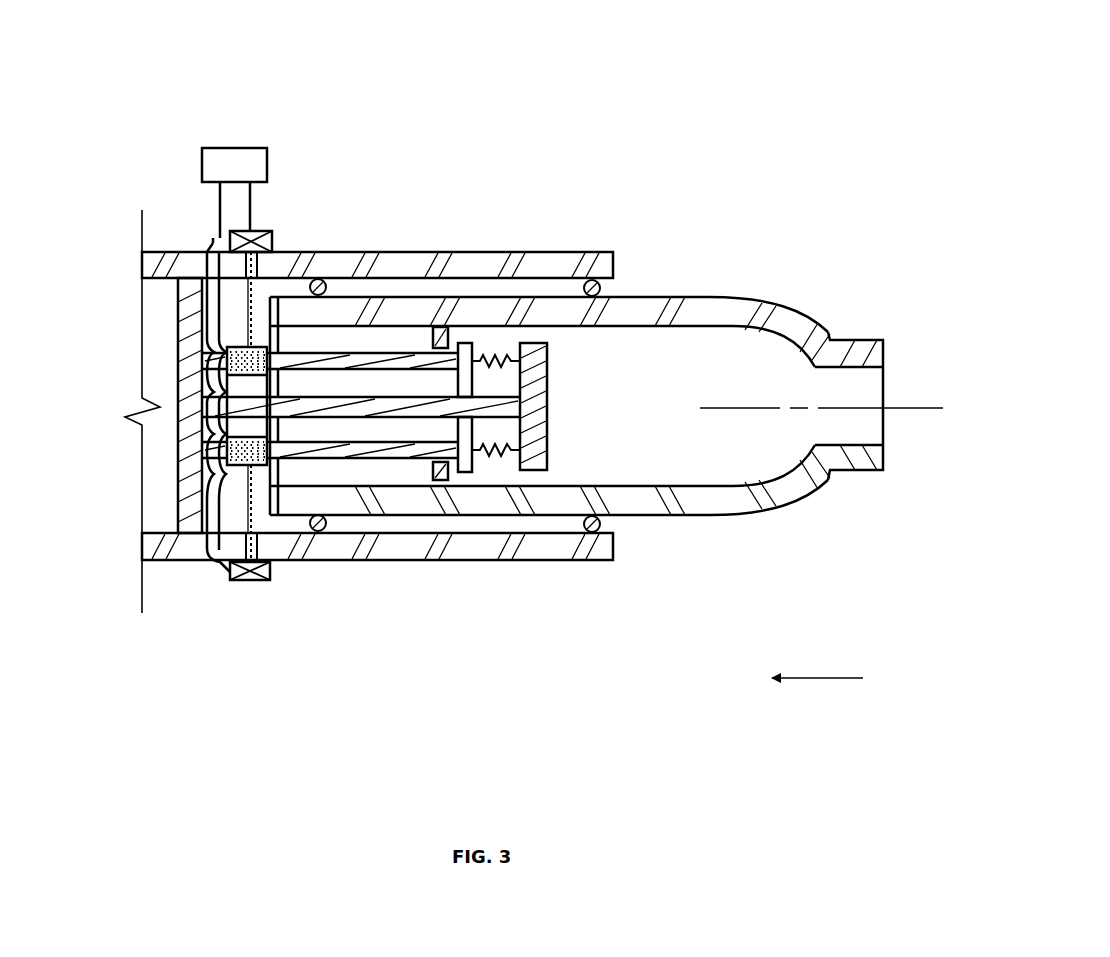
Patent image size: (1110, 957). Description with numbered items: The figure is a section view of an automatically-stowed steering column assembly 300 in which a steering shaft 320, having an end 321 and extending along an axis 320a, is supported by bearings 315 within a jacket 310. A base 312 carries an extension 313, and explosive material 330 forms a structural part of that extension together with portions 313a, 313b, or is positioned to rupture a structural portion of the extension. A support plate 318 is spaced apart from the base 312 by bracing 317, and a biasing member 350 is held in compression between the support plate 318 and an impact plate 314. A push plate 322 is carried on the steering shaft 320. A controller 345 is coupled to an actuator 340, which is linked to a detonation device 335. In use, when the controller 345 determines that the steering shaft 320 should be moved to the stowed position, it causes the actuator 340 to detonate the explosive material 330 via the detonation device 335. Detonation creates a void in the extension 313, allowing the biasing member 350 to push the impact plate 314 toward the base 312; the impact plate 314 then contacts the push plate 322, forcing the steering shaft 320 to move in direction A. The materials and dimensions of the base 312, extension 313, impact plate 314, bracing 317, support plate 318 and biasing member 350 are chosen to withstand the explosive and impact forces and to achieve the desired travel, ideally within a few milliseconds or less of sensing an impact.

The automatically-stowed steering column assembly 300 is at (680, 80).
The jacket 310 is at (547, 263).
The base 312 is at (177, 497).
The extension 313 is at (413, 478).
The portion 313a is at (212, 358).
The portion 313b is at (340, 353).
The impact plate 314 is at (460, 342).
The bearings 315 is at (600, 288).
The bracing 317 is at (372, 407).
The support plate 318 is at (535, 372).
The steering shaft 320 is at (692, 298).
The axis 320a is at (913, 410).
The end 321 is at (838, 312).
The push plate 322 is at (435, 328).
The explosive material 330 is at (256, 345).
The detonation device 335 is at (208, 317).
The actuator 340 is at (273, 238).
The controller 345 is at (230, 162).
The biasing member 350 is at (486, 352).